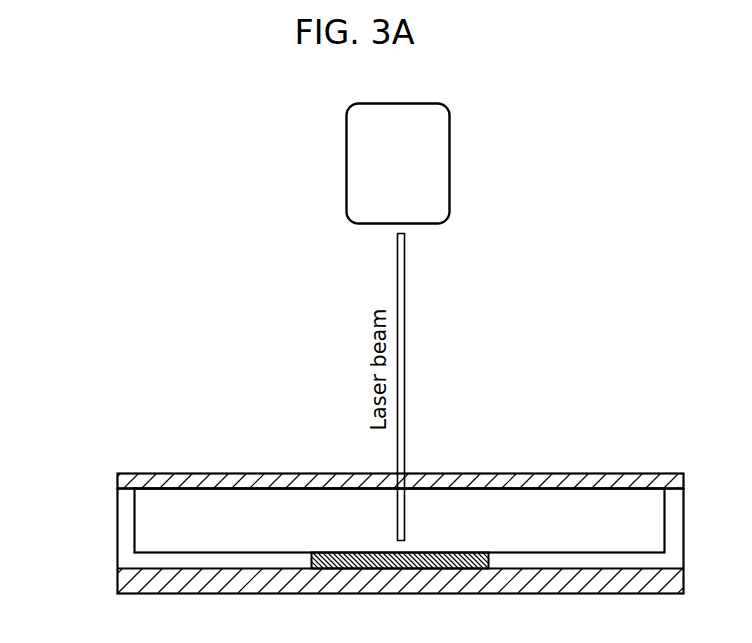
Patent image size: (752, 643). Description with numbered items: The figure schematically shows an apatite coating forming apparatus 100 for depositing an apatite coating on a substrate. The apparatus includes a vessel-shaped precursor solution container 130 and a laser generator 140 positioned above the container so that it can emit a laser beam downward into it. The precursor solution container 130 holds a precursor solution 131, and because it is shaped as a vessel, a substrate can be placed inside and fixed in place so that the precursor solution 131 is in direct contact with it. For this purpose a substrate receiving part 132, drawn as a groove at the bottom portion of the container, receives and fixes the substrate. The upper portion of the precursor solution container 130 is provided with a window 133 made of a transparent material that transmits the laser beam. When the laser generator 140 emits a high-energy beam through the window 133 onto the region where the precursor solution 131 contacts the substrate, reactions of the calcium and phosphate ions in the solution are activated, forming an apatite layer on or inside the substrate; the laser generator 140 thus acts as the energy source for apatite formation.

The apatite coating forming apparatus 100 is at (67, 123).
The precursor solution container 130 is at (126, 532).
The precursor solution 131 is at (152, 515).
The substrate receiving part 132 is at (452, 556).
The window 133 is at (125, 481).
The laser generator 140 is at (345, 169).